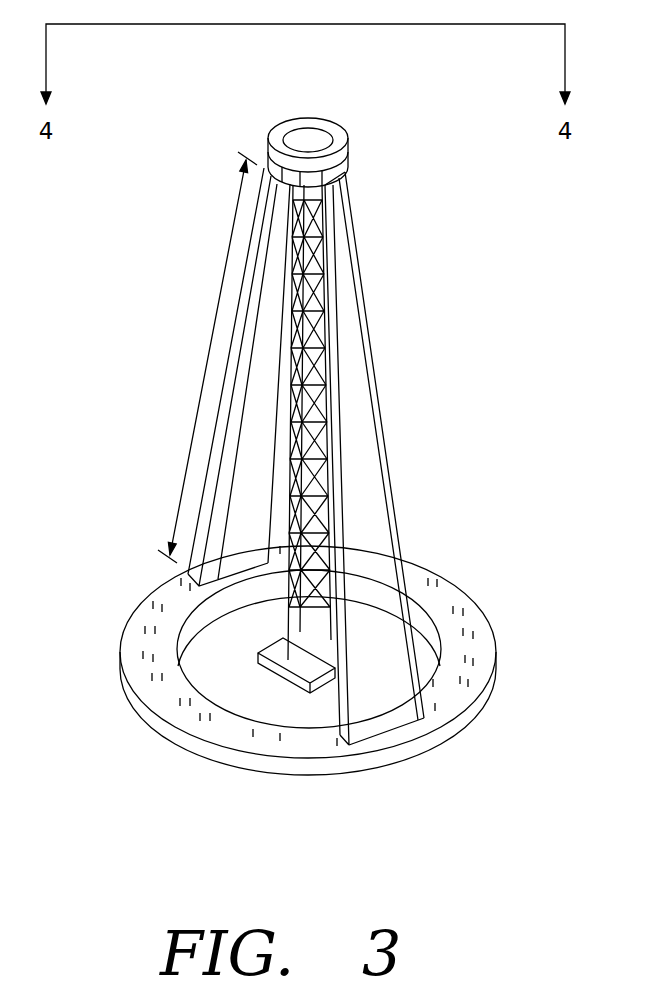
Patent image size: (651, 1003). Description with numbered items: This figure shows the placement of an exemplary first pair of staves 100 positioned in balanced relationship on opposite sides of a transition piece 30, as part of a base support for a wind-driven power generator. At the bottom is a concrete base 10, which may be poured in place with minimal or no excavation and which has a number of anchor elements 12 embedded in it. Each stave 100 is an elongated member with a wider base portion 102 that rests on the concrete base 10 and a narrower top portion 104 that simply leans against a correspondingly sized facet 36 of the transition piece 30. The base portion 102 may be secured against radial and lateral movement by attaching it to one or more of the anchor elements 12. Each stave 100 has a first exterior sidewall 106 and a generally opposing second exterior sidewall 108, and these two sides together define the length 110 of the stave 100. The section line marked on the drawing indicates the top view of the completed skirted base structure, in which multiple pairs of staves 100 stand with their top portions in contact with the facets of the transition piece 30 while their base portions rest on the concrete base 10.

The concrete base 10 is at (322, 670).
The anchor elements 12 is at (153, 602).
The transition piece 30 is at (369, 174).
The facet 36 is at (348, 170).
The staves 100 is at (289, 516).
The base portion 102 is at (395, 732).
The top portion 104 is at (340, 190).
The first exterior sidewall 106 is at (405, 497).
The second exterior sidewall 108 is at (336, 712).
The length 110 is at (193, 420).